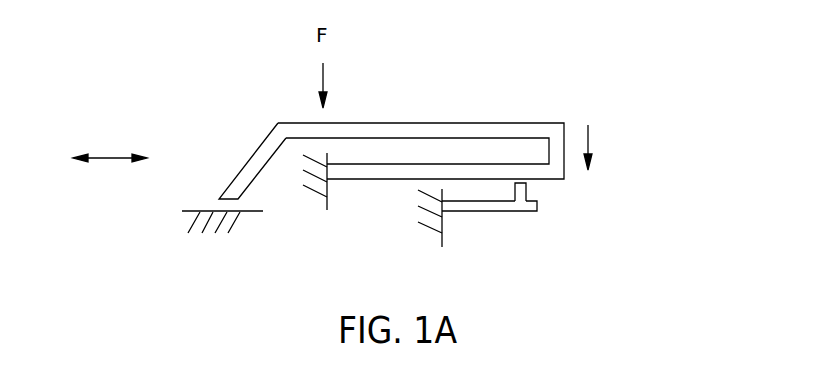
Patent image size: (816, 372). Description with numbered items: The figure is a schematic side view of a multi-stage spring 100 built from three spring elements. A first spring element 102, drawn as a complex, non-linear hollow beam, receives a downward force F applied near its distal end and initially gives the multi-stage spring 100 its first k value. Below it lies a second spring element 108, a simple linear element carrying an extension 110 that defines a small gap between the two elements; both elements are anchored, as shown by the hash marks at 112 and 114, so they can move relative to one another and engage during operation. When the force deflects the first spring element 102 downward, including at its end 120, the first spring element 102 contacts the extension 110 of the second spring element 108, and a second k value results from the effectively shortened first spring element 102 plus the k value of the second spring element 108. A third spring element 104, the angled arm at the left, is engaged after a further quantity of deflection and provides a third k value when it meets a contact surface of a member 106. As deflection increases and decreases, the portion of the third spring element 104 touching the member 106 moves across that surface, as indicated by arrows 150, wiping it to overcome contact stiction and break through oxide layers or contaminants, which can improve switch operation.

The multi-stage spring 100 is at (415, 40).
The first spring element 102 is at (492, 123).
The third spring element 104 is at (260, 147).
The member 106 is at (205, 210).
The second spring element 108 is at (495, 211).
The extension 110 is at (528, 190).
The anchor 112 is at (328, 192).
The anchor 114 is at (443, 227).
The end of the first spring element 120 is at (549, 123).
The arrows 150 is at (108, 158).